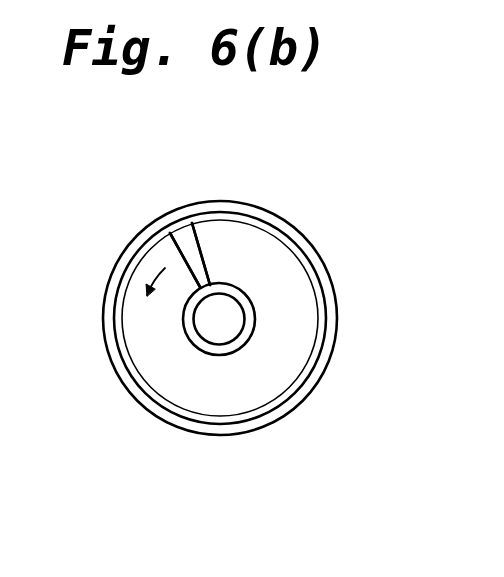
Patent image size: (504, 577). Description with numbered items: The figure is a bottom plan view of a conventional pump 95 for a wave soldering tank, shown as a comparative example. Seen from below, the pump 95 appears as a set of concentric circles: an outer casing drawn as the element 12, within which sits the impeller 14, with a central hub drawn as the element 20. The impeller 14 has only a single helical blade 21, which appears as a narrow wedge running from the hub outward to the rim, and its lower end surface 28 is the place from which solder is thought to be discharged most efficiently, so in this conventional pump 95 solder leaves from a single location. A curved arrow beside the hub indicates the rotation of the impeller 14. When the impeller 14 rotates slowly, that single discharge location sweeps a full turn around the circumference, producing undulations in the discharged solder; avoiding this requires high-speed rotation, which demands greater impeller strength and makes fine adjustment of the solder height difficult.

The pump 95 is at (260, 208).
The outer ring 12 is at (311, 257).
The impeller 14 is at (228, 380).
The hub 20 is at (190, 315).
The helical blade 21 is at (190, 248).
The lower end surface 28 is at (190, 255).